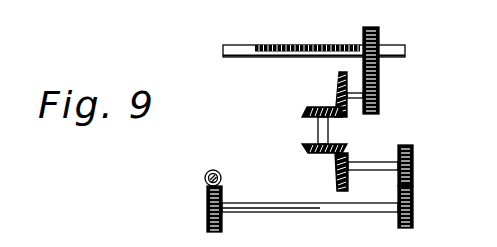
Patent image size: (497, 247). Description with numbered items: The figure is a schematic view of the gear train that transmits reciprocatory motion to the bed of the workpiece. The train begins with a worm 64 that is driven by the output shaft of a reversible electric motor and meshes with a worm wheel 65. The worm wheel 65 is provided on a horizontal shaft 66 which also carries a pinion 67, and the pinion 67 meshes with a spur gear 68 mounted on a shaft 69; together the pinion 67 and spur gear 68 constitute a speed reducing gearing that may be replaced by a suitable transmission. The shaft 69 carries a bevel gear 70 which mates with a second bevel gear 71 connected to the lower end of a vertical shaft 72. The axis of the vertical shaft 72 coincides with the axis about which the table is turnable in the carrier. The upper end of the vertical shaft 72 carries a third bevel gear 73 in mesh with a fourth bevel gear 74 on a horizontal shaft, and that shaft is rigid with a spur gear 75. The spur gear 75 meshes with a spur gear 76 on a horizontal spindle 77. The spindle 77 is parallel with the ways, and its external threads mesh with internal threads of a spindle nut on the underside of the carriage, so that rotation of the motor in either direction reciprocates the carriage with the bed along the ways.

The worm 64 is at (205, 178).
The worm wheel 65 is at (207, 217).
The horizontal shaft 66 is at (300, 212).
The pinion 67 is at (413, 207).
The spur gear 68 is at (413, 161).
The shaft 69 is at (375, 168).
The bevel gear 70 is at (337, 178).
The second bevel gear 71 is at (301, 149).
The vertical shaft 72 is at (318, 129).
The third bevel gear 73 is at (303, 112).
The fourth bevel gear 74 is at (338, 79).
The spur gear 75 is at (379, 100).
The spur gear 76 is at (379, 37).
The horizontal spindle 77 is at (295, 58).